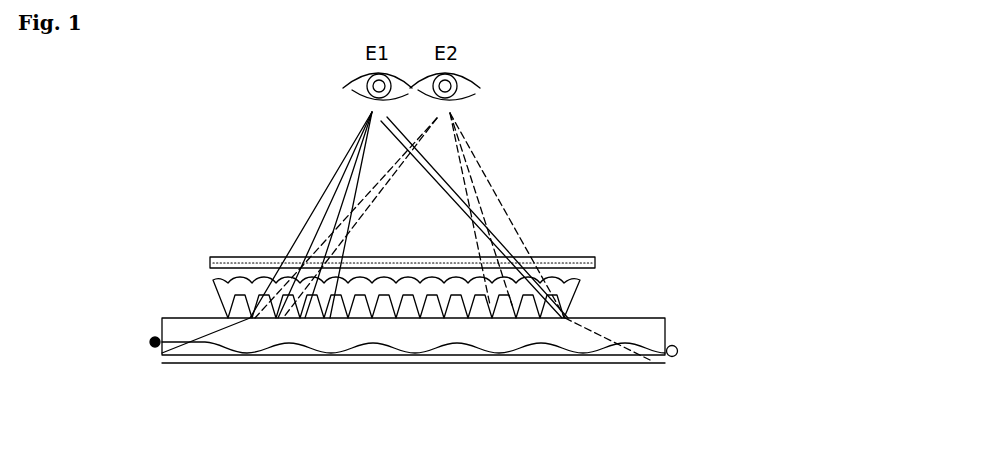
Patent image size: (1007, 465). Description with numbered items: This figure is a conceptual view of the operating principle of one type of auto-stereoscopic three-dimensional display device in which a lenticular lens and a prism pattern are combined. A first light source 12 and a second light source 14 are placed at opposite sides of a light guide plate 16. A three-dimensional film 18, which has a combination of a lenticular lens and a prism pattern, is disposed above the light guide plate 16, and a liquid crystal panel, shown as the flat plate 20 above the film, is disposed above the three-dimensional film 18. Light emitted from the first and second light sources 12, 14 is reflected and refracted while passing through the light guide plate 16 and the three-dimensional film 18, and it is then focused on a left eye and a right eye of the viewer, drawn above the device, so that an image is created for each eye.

The first light source 12 is at (153, 348).
The second light source 14 is at (678, 351).
The light guide plate 16 is at (512, 340).
The 3D film 18 is at (572, 290).
The display panel / diffuser plate 20 is at (595, 263).